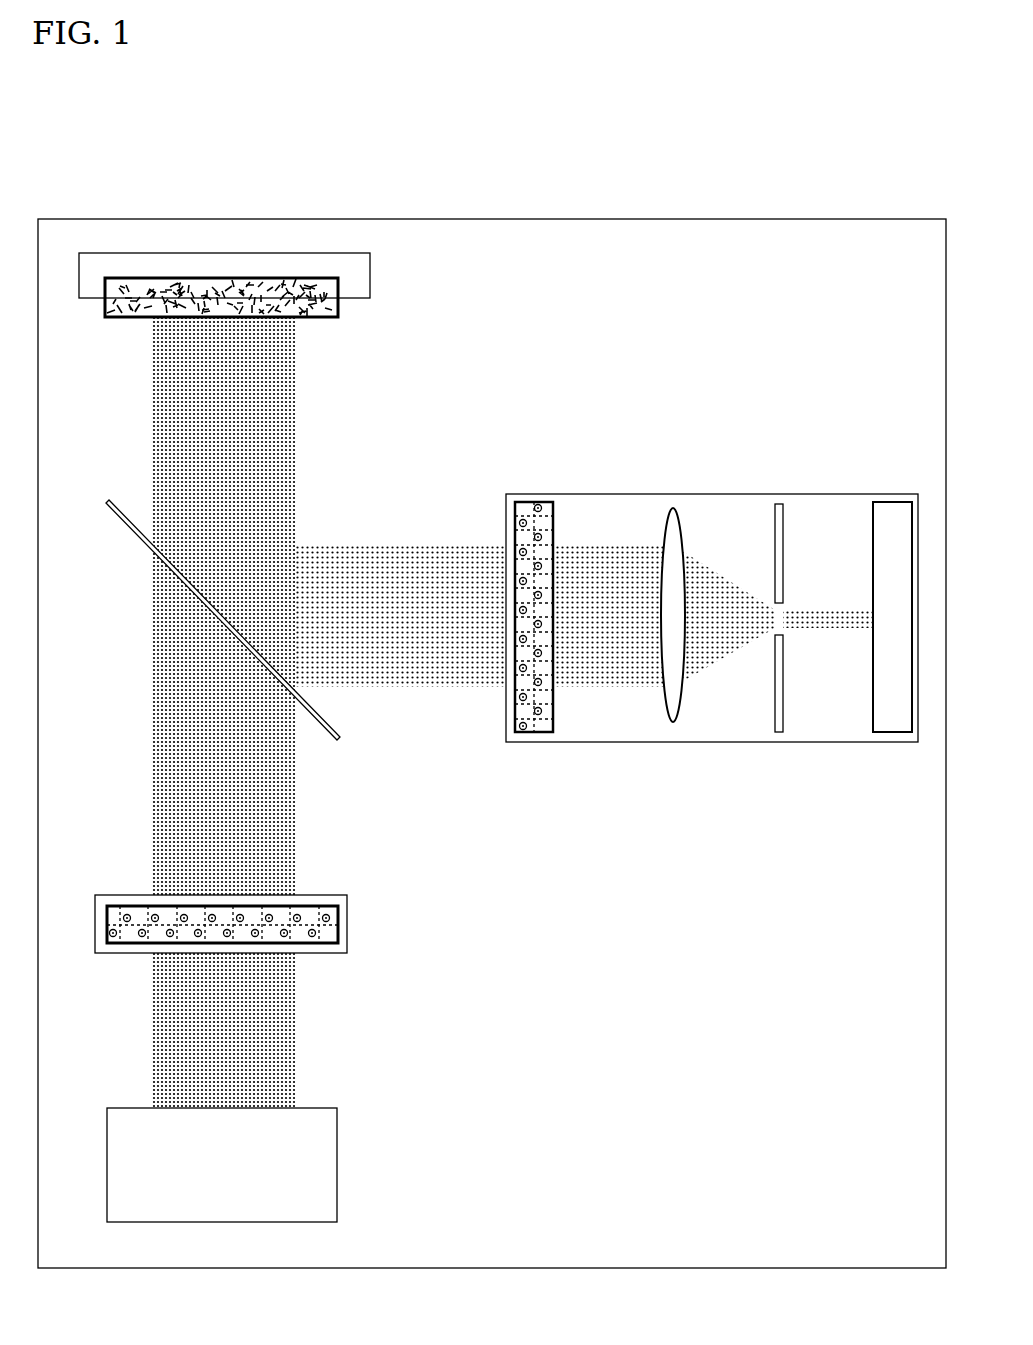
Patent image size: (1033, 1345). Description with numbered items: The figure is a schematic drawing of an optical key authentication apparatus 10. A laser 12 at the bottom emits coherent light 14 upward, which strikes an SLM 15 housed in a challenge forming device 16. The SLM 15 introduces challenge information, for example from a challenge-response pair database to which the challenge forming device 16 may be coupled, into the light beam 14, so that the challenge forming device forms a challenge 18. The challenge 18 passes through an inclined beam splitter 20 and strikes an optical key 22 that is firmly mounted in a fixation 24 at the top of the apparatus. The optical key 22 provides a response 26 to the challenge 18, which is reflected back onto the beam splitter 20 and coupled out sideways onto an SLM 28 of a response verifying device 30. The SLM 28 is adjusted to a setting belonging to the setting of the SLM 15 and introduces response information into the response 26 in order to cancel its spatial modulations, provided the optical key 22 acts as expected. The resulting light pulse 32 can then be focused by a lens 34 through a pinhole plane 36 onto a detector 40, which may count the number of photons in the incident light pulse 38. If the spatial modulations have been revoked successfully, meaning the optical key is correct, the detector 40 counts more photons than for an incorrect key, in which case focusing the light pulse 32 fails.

The optical key authentication apparatus 10 is at (482, 216).
The laser 12 is at (337, 1108).
The coherent light 14 is at (235, 1018).
The SLM 15 is at (340, 942).
The challenge forming device 16 is at (347, 903).
The challenge 18 is at (235, 820).
The beam splitter 20 is at (340, 742).
The optical key 22 is at (340, 312).
The fixation 24 is at (372, 268).
The response 26 is at (235, 385).
The SLM 28 is at (530, 502).
The response verifying device 30 is at (595, 494).
The light pulse 32 is at (600, 610).
The lens 34 is at (665, 508).
The pinhole plane 36 is at (775, 505).
The incident light pulse 38 is at (826, 615).
The detector 40 is at (893, 497).